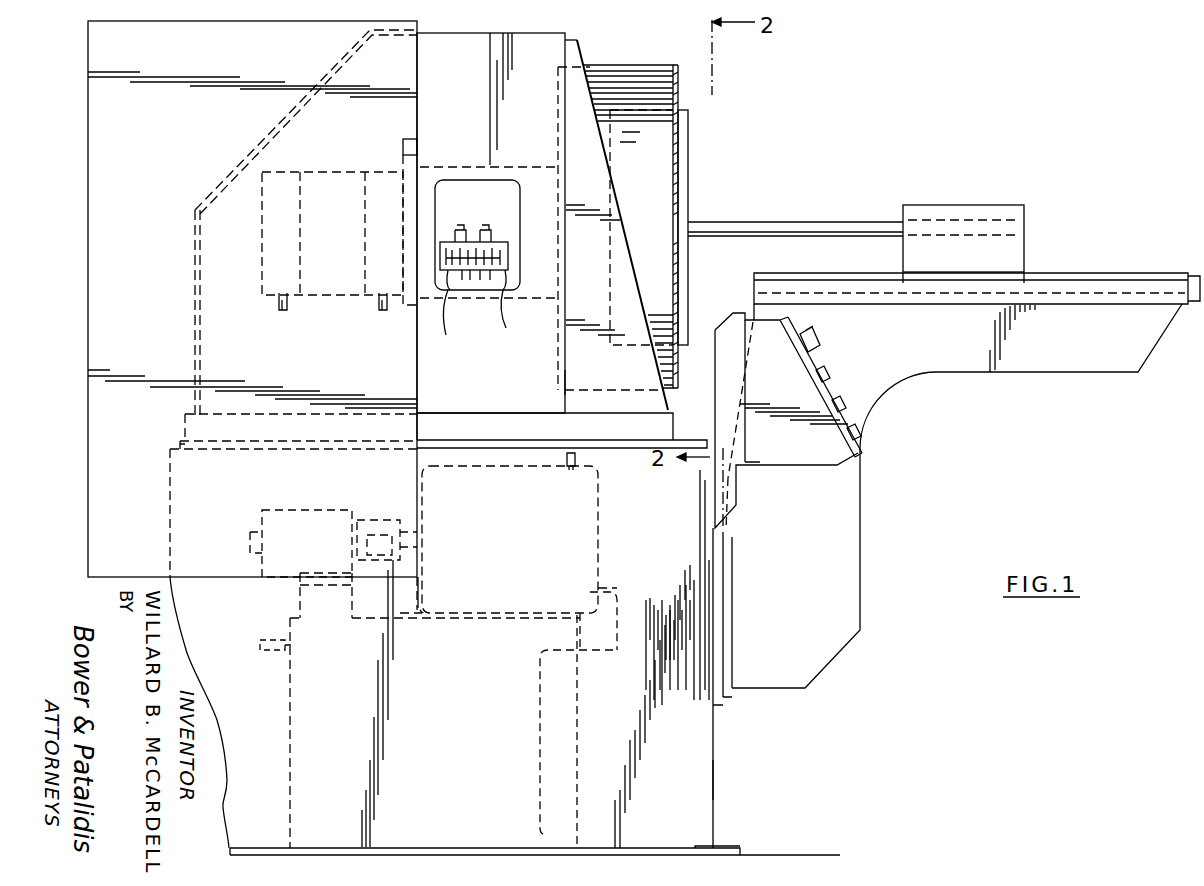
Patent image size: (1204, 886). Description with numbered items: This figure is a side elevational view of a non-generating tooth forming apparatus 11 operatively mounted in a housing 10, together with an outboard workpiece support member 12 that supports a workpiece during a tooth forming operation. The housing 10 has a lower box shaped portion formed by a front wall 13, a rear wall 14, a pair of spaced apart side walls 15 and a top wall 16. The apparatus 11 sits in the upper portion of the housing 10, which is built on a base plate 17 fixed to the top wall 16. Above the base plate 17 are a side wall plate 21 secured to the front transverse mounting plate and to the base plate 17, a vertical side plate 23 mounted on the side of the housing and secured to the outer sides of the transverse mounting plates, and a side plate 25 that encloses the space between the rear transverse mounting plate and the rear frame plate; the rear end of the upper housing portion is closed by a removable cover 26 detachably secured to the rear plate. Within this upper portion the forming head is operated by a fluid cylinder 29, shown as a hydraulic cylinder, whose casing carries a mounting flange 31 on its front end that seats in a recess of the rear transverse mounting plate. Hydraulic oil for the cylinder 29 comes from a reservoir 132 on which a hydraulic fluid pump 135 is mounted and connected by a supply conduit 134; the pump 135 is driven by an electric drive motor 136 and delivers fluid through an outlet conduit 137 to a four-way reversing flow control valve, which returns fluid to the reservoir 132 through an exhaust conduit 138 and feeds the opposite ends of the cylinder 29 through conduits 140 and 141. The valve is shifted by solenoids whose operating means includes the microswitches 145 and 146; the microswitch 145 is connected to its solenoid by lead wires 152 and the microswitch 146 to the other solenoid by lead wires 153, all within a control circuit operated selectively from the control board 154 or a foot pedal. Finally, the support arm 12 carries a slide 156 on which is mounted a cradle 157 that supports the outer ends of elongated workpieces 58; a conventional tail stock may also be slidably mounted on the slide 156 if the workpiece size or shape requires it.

The housing 10 is at (713, 826).
The non-generating tooth forming apparatus 11 is at (688, 172).
The outboard workpiece support member 12 is at (1064, 355).
The front wall 13 is at (715, 768).
The rear wall 14 is at (168, 518).
The side walls 15 is at (703, 803).
The top wall 16 is at (517, 443).
The base plate 17 is at (452, 428).
The side wall plate 21 is at (582, 58).
The vertical side plates 23 is at (565, 378).
The side plates 25 is at (100, 257).
The removable cover 26 is at (238, 168).
The fluid cylinder 29 is at (331, 200).
The mounting flange 31 is at (403, 150).
The elongated workpieces 58 is at (822, 232).
The reservoir 132 is at (547, 774).
The supply conduit 134 is at (618, 612).
The hydraulic fluid pump 135 is at (580, 557).
The electric drive motor 136 is at (300, 524).
The outlet conduit 137 is at (566, 460).
The exhaust conduit 138 is at (272, 655).
The conduit 140 is at (280, 300).
The conduit 141 is at (381, 300).
The microswitch 145 is at (460, 230).
The microswitch 146 is at (486, 238).
The lead wires 152 is at (446, 335).
The lead wires 153 is at (508, 322).
The control board 154 is at (827, 388).
The slide 156 is at (1099, 272).
The cradle 157 is at (987, 207).